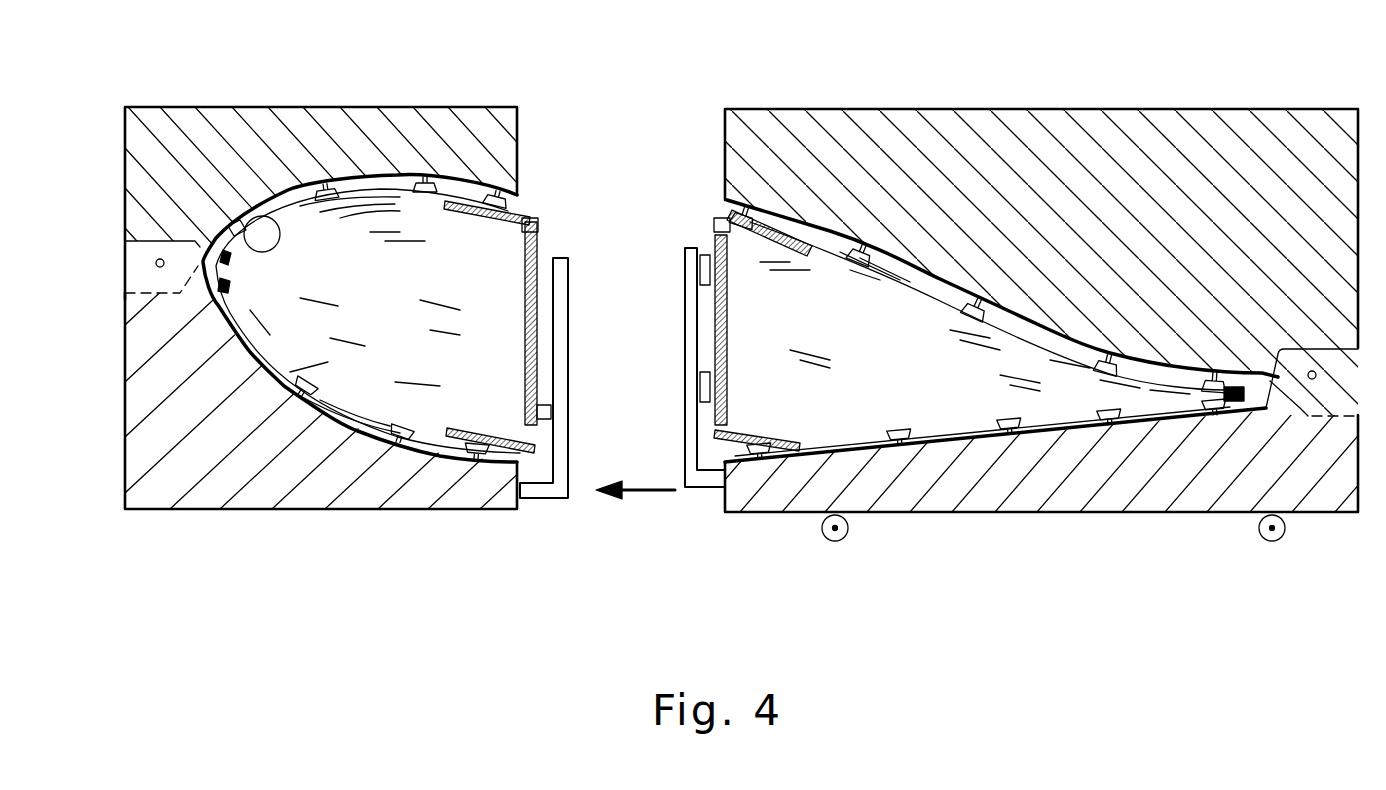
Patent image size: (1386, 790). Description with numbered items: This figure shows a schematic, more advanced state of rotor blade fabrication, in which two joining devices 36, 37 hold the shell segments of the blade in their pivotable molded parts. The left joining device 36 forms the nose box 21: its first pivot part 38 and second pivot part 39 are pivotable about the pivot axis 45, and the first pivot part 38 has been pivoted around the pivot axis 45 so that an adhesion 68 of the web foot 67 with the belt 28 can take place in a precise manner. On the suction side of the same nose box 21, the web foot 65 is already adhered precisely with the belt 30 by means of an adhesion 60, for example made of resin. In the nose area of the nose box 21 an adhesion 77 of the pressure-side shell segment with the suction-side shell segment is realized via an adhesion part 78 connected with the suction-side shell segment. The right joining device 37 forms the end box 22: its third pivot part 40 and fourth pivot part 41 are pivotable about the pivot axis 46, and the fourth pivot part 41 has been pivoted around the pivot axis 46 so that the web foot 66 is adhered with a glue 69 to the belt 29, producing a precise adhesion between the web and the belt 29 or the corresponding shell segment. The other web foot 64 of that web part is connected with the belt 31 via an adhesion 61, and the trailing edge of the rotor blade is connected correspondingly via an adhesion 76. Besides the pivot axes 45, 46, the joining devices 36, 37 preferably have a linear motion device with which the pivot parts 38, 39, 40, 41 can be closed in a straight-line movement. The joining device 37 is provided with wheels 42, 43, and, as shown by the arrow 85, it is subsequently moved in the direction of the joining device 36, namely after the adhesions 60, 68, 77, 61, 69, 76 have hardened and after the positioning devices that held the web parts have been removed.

The nose box 21 is at (322, 338).
The end box 22 is at (908, 332).
The belt 28 is at (528, 200).
The belt 29 is at (740, 213).
The belt 30 is at (478, 452).
The belt 31 is at (800, 450).
The joining device 36 is at (512, 339).
The joining device 37 is at (999, 357).
The first pivot part 38 is at (340, 145).
The second pivot part 39 is at (313, 482).
The third pivot part 40 is at (1135, 470).
The fourth pivot part 41 is at (1048, 195).
The wheel 42 is at (850, 532).
The wheel 43 is at (1262, 415).
The pivot axis 45 is at (176, 240).
The pivot axis 46 is at (1315, 380).
The adhesion 60 is at (532, 438).
The adhesion 61 is at (718, 437).
The web foot 64 is at (712, 410).
The web foot 65 is at (553, 410).
The web foot 66 is at (715, 244).
The web foot 67 is at (540, 246).
The adhesion 68 is at (540, 218).
The glue 69 is at (715, 222).
The adhesion 76 is at (1238, 402).
The adhesion 77 is at (228, 266).
The adhesion part 78 is at (278, 205).
The arrow 85 is at (645, 498).